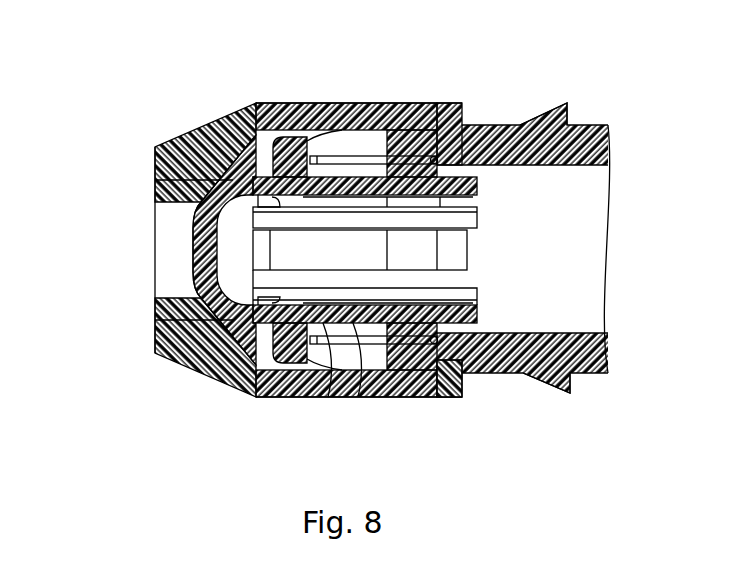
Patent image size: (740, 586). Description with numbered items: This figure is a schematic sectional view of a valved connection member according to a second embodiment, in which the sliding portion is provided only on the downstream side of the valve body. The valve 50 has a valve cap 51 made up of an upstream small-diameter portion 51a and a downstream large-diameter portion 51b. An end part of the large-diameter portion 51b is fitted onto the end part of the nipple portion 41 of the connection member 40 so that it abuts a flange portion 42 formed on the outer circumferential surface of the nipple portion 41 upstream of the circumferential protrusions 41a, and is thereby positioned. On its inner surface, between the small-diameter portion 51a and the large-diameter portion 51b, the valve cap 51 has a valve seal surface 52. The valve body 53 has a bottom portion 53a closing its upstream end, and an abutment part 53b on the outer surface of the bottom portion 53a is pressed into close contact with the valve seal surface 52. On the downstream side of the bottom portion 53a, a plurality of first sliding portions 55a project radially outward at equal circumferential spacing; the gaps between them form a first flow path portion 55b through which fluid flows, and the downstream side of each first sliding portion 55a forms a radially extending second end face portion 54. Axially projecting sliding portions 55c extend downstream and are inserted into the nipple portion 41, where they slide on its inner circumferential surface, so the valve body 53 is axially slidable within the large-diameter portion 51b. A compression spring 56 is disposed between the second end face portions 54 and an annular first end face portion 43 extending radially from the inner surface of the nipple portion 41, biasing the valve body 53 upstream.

The mating connector 40 is at (504, 236).
The nipple portion 41 is at (522, 218).
The circumferential protrusions 41a is at (553, 113).
The flange portion 42 is at (445, 103).
The first end face portion 43 is at (460, 106).
The valve 50 is at (317, 241).
The valve cap 51 is at (308, 218).
The small-diameter portion 51a is at (203, 138).
The large-diameter portion 51b is at (389, 102).
The valve seal surface 52 is at (155, 180).
The valve body 53 is at (157, 202).
The bottom portion 53a is at (203, 213).
The abutment part 53b is at (190, 343).
The second end face portion 54 is at (309, 140).
The first sliding portions 55a is at (280, 398).
The first flow path portion 55b is at (299, 259).
The axially projecting sliding portions 55c is at (468, 222).
The compression spring 56 is at (308, 380).